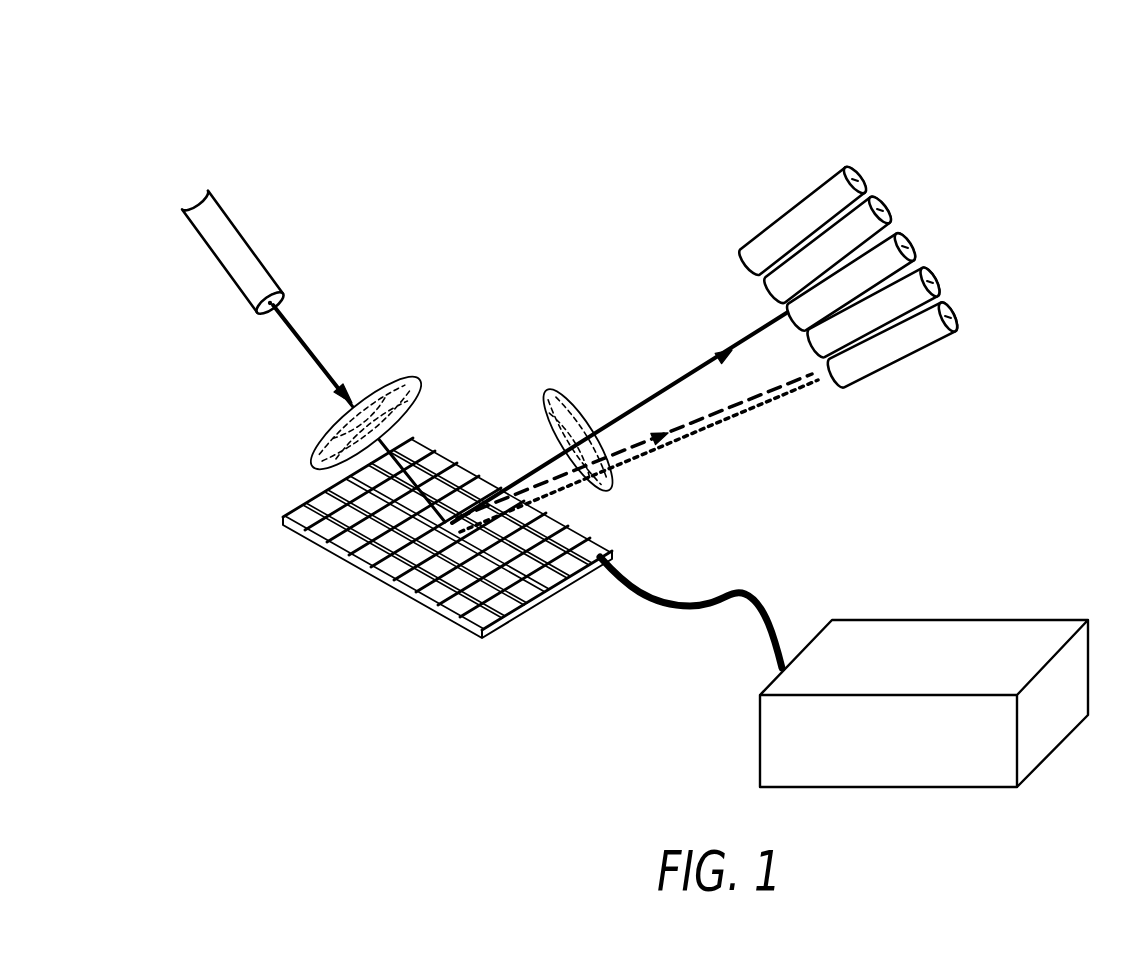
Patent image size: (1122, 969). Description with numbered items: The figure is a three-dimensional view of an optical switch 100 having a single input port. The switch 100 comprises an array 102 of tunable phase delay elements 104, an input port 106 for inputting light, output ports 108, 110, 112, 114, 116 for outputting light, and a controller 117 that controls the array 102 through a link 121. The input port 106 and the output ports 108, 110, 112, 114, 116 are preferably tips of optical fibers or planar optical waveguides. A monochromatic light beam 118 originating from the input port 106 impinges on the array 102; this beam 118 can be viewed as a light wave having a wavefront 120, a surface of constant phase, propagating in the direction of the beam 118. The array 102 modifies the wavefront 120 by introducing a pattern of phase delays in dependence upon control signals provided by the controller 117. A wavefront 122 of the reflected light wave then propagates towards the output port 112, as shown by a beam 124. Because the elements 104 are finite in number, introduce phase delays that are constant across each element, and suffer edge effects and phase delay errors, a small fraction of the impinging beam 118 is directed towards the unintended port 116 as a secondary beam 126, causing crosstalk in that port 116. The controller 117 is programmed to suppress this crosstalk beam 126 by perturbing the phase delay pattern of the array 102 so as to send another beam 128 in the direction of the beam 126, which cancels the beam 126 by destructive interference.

The optical switch 100 is at (603, 98).
The array of tunable phase delay elements 102 is at (466, 550).
The tunable phase delay elements 104 is at (418, 438).
The input port 106 is at (225, 213).
The output port 108 is at (871, 170).
The output port 110 is at (888, 204).
The output port 112 is at (913, 240).
The output port 114 is at (940, 281).
The output port 116 is at (957, 313).
The controller 117 is at (875, 754).
The monochromatic light beam 118 is at (292, 317).
The wavefront 120 is at (415, 381).
The link 121 is at (760, 638).
The wavefront of reflected light wave 122 is at (607, 494).
The beam 124 is at (688, 375).
The secondary beam 126 is at (741, 407).
The beam 128 is at (808, 380).